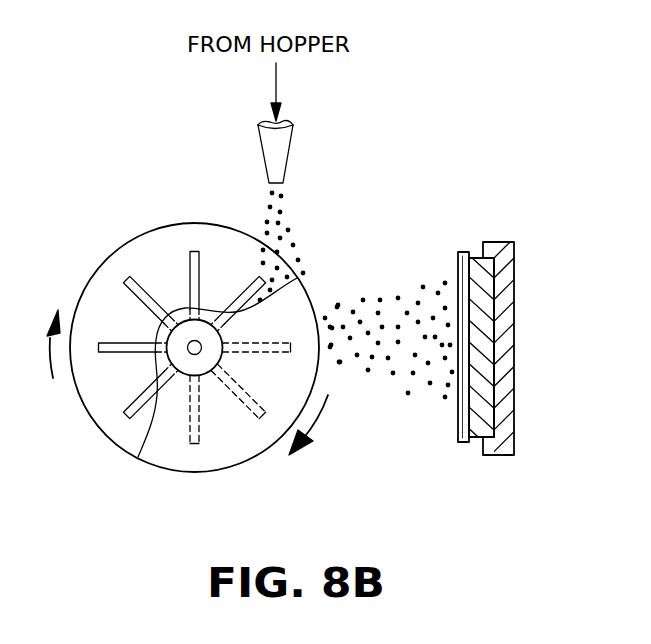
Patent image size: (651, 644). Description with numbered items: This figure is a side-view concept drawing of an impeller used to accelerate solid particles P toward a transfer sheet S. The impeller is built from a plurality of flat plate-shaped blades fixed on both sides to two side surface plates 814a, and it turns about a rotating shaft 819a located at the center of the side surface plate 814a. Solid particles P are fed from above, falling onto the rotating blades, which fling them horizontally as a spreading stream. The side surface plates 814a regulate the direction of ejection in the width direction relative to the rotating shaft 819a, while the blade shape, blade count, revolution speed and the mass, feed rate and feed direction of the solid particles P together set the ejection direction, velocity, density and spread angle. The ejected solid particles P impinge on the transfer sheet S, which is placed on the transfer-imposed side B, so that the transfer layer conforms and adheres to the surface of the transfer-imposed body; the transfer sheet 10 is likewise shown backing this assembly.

The side surface plate 814a is at (243, 445).
The rotating shaft 819a is at (188, 350).
The solid particles P is at (283, 221).
The transfer sheet S is at (458, 424).
The transfer-imposed side B is at (482, 428).
The transfer sheet 10 is at (510, 432).